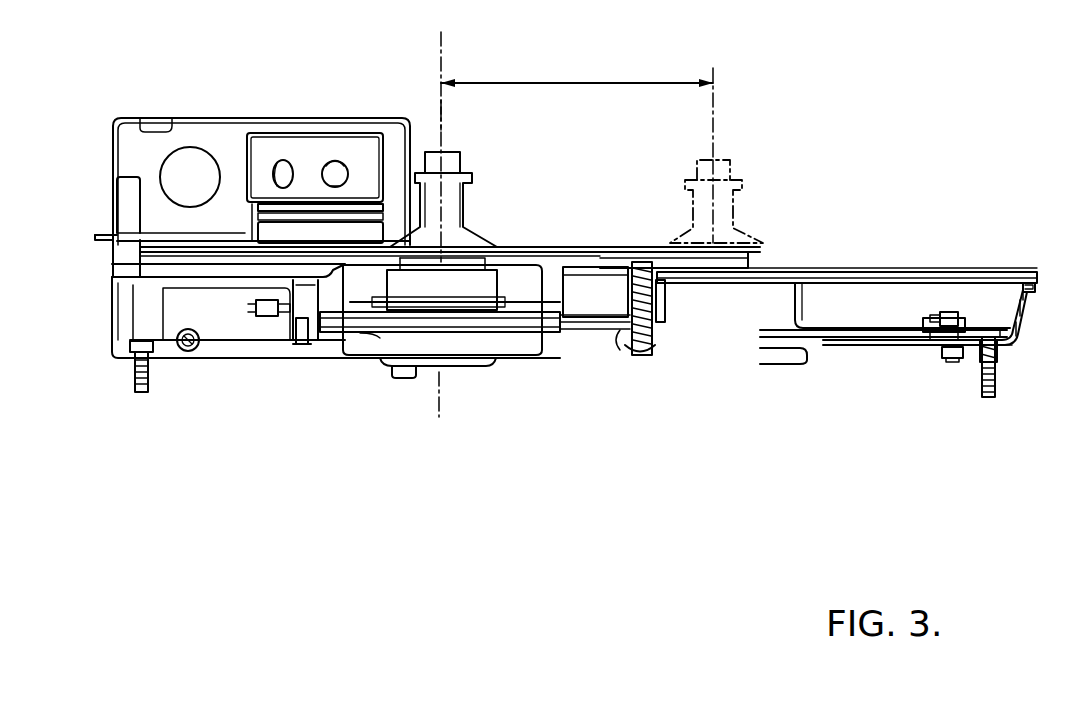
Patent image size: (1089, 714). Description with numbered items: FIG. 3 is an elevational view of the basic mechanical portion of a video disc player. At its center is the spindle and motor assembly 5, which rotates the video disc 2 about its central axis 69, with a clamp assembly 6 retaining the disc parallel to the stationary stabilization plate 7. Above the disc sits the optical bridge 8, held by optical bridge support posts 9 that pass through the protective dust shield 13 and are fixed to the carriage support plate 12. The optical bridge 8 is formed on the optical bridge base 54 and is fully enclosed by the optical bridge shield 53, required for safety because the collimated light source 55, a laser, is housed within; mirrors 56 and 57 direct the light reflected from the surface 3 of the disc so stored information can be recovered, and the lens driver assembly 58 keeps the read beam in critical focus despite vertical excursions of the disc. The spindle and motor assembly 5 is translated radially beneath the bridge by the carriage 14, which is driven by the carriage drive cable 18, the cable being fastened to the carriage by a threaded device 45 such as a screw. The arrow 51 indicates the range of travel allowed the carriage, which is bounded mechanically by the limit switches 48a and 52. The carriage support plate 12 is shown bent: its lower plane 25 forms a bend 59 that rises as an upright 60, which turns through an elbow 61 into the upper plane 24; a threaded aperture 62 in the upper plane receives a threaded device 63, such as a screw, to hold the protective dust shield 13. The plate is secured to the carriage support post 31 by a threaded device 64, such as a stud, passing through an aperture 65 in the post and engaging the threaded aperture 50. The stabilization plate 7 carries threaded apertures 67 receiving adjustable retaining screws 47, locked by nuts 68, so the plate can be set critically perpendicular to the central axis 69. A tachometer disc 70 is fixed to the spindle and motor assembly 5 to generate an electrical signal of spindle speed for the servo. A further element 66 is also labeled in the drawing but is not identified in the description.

The video disc 2 is at (565, 247).
The surface of the video disc 3 is at (441, 32).
The spindle and motor assembly 5 is at (497, 366).
The clamp assembly 6 is at (468, 208).
The stabilization plate 7 is at (750, 259).
The optical bridge 8 is at (284, 98).
The optical bridge support post 9 is at (115, 254).
The carriage support plate 12 is at (925, 330).
The protective dust shield 13 is at (960, 272).
The carriage 14 is at (665, 312).
The carriage drive cable 18 is at (218, 355).
The upper plane of the carriage support plate 24 is at (995, 272).
The lower plane of the carriage support plate 25 is at (1014, 344).
The carriage support post 31 is at (970, 360).
The threaded device 45 is at (300, 345).
The adjustable retaining screws 47 is at (645, 357).
The limit switch 48a is at (285, 318).
The threaded aperture 50 is at (1000, 322).
The arrow 51 is at (618, 87).
The limit switch 52 is at (948, 314).
The optical bridge shield 53 is at (397, 122).
The optical bridge base 54 is at (123, 203).
The collimated light source 55 is at (200, 160).
The mirror 56 is at (287, 164).
The mirror 57 is at (342, 172).
The lens driver assembly 58 is at (268, 222).
The bend 59 is at (1018, 336).
The upright 60 is at (1023, 316).
The elbow 61 is at (1028, 297).
The threaded aperture 62 is at (1036, 286).
The threaded device 63 is at (1028, 282).
The threaded device 64 is at (988, 397).
The aperture 65 is at (1000, 362).
The foot 66 is at (311, 346).
The threaded apertures 67 is at (644, 262).
The threaded locking means 68 is at (656, 330).
The central axis 69 is at (445, 118).
The tachometer disc 70 is at (530, 302).